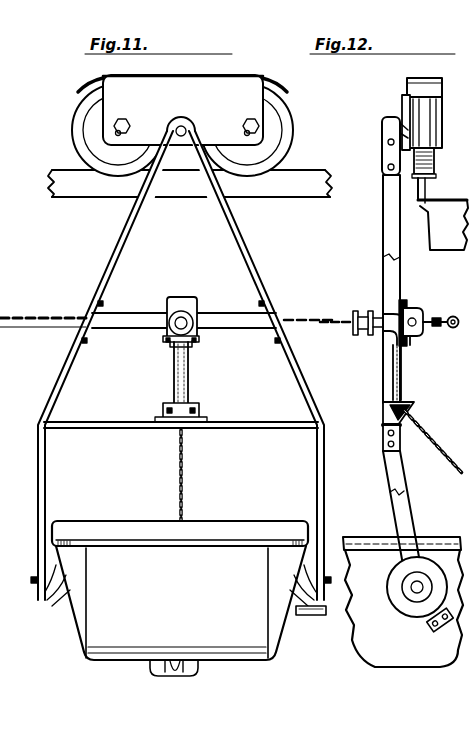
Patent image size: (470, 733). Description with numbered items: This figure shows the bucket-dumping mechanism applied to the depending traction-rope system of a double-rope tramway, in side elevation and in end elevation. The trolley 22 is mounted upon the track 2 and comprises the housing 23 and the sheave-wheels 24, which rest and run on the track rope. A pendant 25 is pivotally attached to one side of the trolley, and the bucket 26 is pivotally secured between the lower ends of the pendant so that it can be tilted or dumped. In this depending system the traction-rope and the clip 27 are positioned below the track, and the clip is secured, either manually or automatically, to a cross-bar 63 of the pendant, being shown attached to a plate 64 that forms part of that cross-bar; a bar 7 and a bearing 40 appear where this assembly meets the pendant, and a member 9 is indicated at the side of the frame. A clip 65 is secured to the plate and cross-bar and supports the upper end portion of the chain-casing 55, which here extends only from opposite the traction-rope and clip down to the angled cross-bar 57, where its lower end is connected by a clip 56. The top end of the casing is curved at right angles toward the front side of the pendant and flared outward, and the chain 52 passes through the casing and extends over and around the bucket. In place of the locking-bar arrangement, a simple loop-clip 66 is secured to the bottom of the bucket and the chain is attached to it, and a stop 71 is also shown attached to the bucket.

In FIG. 11, the track rope 2 is at (85, 197).
In FIG. 12, the track rope 2 is at (432, 184).
In FIG. 11, the cross bar 7 is at (28, 318).
In FIG. 11, the partial numeral 9 is at (4, 577).
In FIG. 11, the trolley 22 is at (190, 76).
In FIG. 12, the trolley 22 is at (430, 73).
In FIG. 11, the housing 23 is at (183, 110).
In FIG. 12, the housing 23 is at (402, 108).
In FIG. 11, the sheave-wheels 24 is at (73, 128).
In FIG. 12, the sheave-wheels 24 is at (442, 162).
In FIG. 11, the pendant 25 is at (120, 243).
In FIG. 12, the pendant 25 is at (383, 230).
In FIG. 11, the bucket 26 is at (180, 590).
In FIG. 12, the bucket 26 is at (403, 559).
In FIG. 12, the rope-clip 27 is at (436, 318).
In FIG. 11, the bearing 40 is at (167, 328).
In FIG. 12, the bearing 40 is at (352, 318).
In FIG. 11, the chain 52 is at (186, 491).
In FIG. 12, the chain 52 is at (438, 452).
In FIG. 11, the casing 55 is at (190, 378).
In FIG. 12, the casing 55 is at (402, 370).
In FIG. 12, the clip 56 is at (408, 404).
In FIG. 11, the angled cross-bar 57 is at (132, 430).
In FIG. 12, the angled cross-bar 57 is at (383, 430).
In FIG. 11, the cross-bar 63 is at (218, 324).
In FIG. 12, the cross-bar 63 is at (412, 307).
In FIG. 11, the plate 64 is at (179, 297).
In FIG. 12, the plate 64 is at (404, 343).
In FIG. 11, the clip 65 is at (194, 352).
In FIG. 12, the clip 65 is at (374, 333).
In FIG. 11, the loop-clip 66 is at (162, 676).
In FIG. 11, the stop 71 is at (312, 616).
In FIG. 12, the stop 71 is at (446, 630).